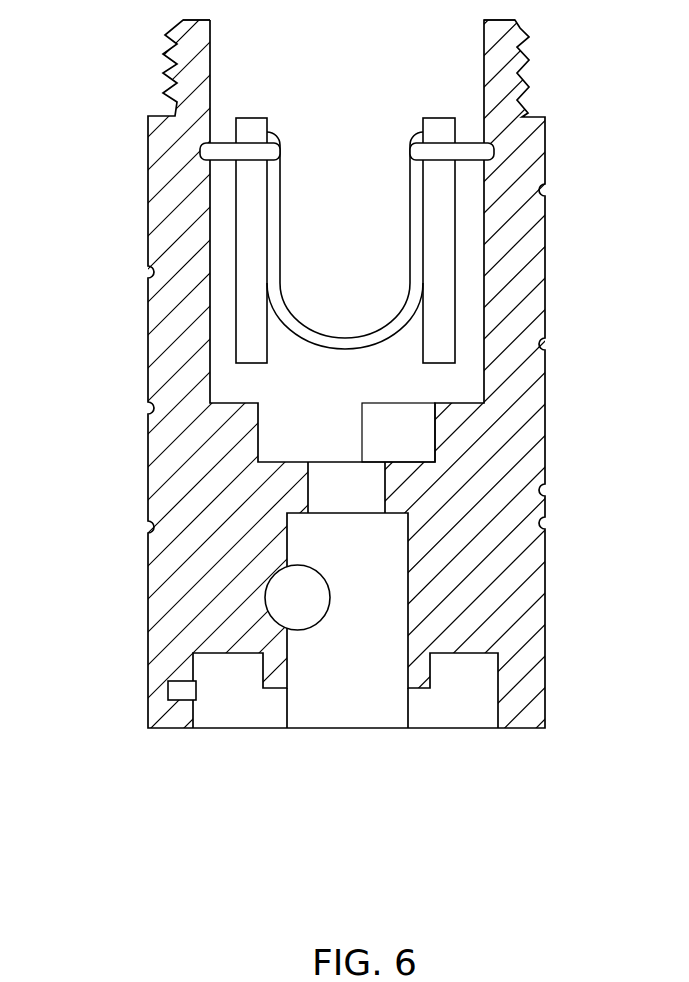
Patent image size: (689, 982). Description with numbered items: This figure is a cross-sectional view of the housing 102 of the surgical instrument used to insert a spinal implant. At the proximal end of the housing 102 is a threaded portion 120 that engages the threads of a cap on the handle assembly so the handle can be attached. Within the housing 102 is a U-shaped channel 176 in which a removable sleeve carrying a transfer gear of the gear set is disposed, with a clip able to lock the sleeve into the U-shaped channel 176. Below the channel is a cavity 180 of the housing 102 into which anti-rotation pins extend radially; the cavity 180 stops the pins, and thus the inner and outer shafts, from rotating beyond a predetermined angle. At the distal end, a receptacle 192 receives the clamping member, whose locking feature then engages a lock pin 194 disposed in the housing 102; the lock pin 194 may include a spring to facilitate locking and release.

The housing 102 is at (546, 598).
The threaded portion 120 is at (528, 54).
The U-shaped channel 176 is at (280, 222).
The cavity 180 is at (398, 422).
The receptacle 192 is at (375, 649).
The lock pin 194 is at (266, 597).